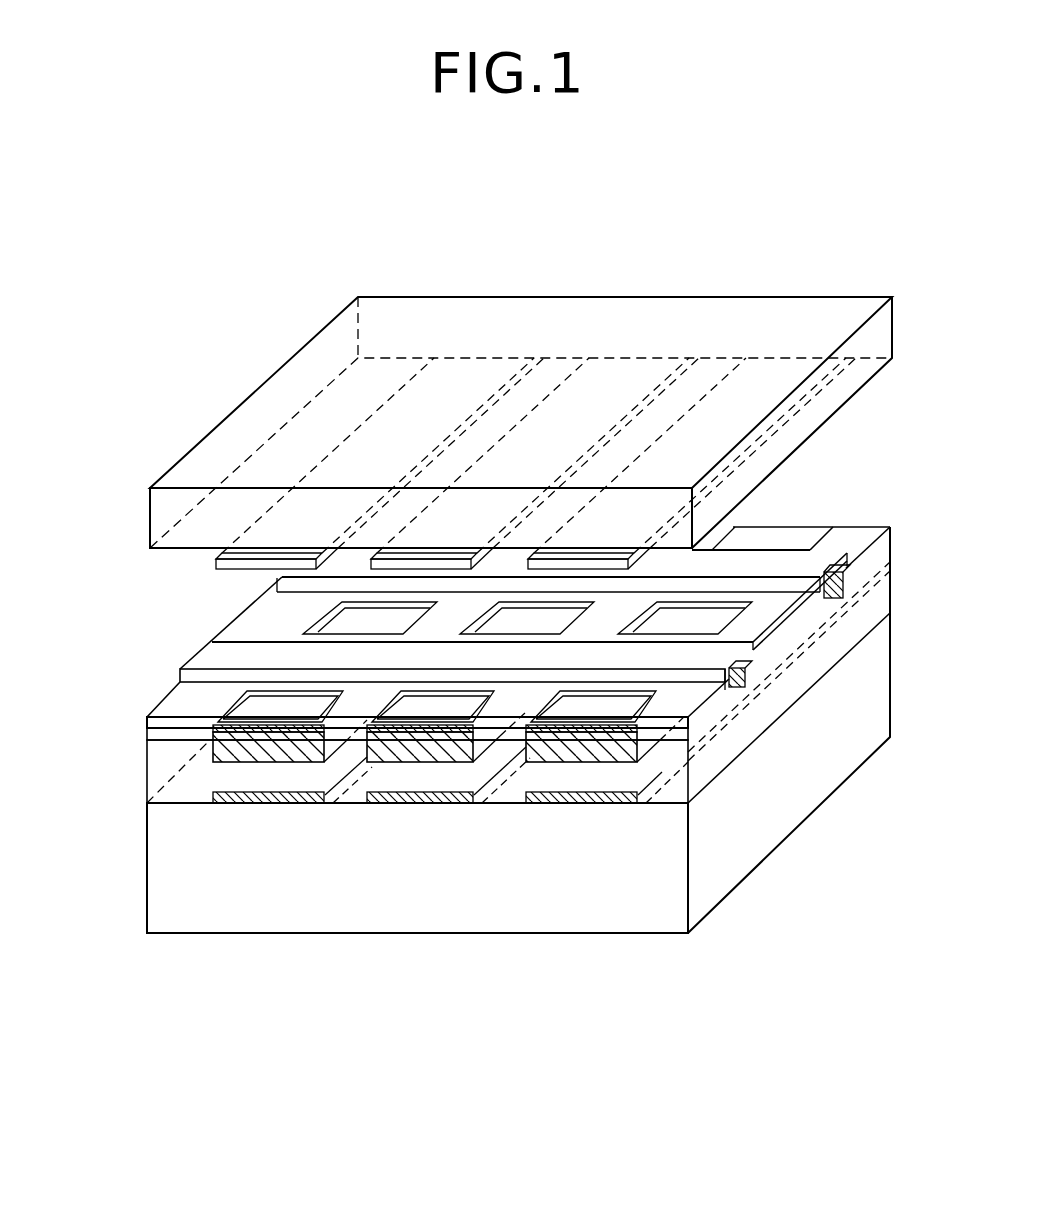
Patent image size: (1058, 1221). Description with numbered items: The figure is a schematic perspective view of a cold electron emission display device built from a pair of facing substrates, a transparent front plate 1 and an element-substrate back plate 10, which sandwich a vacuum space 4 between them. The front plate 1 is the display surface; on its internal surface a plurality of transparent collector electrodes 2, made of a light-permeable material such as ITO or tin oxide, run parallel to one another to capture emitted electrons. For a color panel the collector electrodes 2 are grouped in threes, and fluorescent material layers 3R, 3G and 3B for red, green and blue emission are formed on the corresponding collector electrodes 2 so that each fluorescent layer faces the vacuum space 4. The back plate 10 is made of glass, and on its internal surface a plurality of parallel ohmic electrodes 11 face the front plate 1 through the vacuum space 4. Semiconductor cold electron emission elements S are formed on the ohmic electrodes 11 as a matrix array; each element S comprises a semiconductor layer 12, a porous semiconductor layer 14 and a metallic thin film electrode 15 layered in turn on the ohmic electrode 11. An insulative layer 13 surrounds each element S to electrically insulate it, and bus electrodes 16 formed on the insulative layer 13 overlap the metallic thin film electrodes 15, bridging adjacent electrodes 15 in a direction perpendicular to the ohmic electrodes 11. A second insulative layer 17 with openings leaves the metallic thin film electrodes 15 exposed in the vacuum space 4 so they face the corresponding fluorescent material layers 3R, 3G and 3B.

The transparent front plate 1 is at (335, 338).
The transparent collector electrodes 2 is at (476, 422).
The fluorescent material layer for red emission 3R is at (215, 572).
The fluorescent material layer for green emission 3G is at (424, 567).
The fluorescent material layer for blue emission 3B is at (576, 567).
The vacuum space 4 is at (869, 471).
The element-substrate back plate 10 is at (150, 835).
The ohmic electrodes 11 is at (236, 805).
The semiconductor layer 12 is at (153, 763).
The insulative layer 13 is at (147, 738).
The porous semiconductor layer 14 is at (273, 745).
The metallic thin film electrode 15 is at (303, 735).
The bus electrodes 16 is at (740, 688).
The second insulative layer 17 is at (158, 713).
The semiconductor cold electron emission element S is at (655, 778).